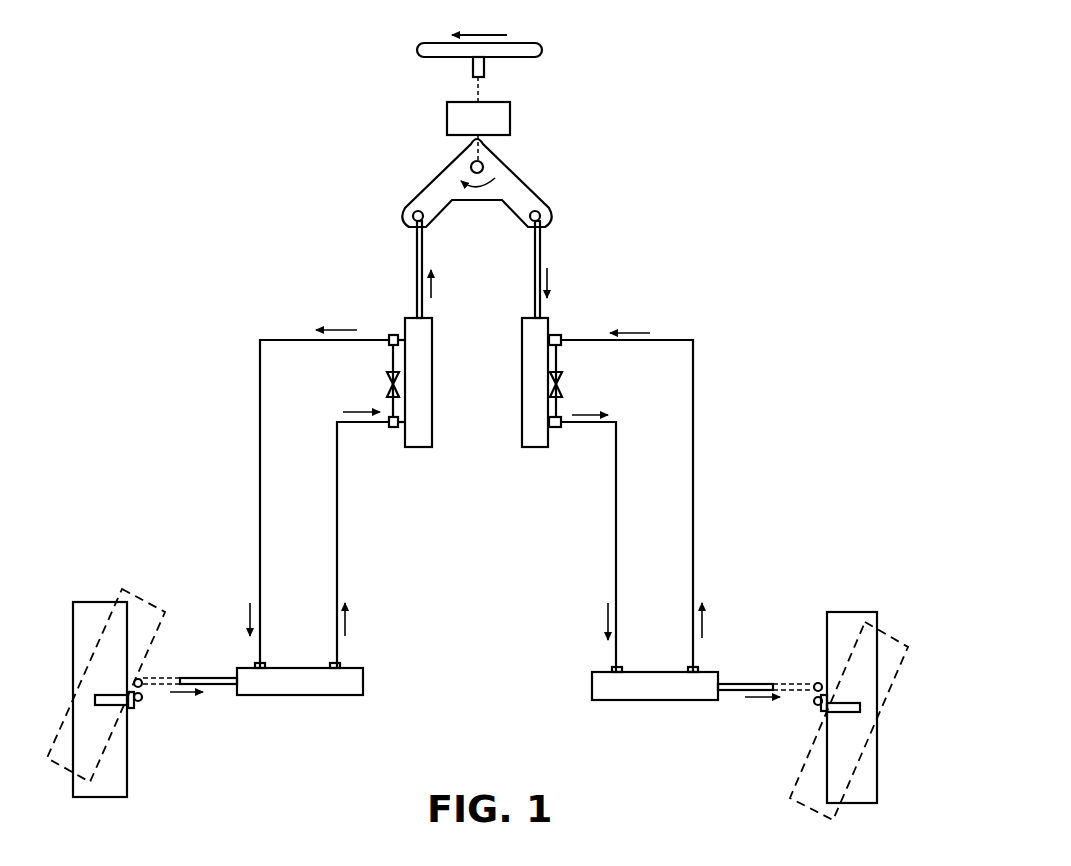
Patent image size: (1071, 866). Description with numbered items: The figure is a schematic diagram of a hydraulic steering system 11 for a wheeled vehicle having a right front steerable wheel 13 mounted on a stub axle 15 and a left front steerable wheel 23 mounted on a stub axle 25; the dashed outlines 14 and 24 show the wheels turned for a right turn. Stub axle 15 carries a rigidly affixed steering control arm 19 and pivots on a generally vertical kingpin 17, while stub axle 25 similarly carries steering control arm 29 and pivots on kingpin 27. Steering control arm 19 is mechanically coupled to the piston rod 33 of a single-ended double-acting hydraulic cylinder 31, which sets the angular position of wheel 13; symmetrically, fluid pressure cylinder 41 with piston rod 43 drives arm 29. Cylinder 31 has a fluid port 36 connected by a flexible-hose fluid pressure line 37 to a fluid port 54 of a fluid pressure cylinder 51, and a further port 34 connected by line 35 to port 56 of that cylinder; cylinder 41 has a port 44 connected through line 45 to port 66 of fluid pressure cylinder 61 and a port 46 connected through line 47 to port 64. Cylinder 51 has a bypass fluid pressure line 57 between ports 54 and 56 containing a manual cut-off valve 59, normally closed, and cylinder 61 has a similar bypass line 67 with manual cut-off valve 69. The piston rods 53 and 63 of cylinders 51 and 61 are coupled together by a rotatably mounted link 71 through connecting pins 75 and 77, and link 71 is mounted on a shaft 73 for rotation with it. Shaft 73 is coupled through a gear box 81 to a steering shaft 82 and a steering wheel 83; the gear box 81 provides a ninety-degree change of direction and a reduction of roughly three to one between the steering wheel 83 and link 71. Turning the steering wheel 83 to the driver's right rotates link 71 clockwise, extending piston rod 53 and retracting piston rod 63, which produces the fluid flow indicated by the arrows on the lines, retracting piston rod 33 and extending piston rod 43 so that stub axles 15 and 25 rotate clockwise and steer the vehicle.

The steering system 11 is at (471, 184).
The right front steerable wheel 13 is at (127, 790).
The dashed outline of wheel 14 is at (170, 590).
The stub axle 15 is at (95, 700).
The kingpin 17 is at (140, 703).
The steering control arm 19 is at (143, 680).
The left front steerable wheel 23 is at (827, 617).
The dashed outline of wheel 24 is at (795, 790).
The stub axle 25 is at (850, 712).
The kingpin 27 is at (815, 702).
The steering control arm 29 is at (815, 683).
The hydraulic cylinder 31 is at (280, 695).
The piston rod 33 is at (210, 678).
The fluid port 34 is at (340, 664).
The fluid pressure line 35 is at (337, 483).
The fluid port 36 is at (262, 664).
The fluid pressure line 37 is at (260, 460).
The fluid pressure cylinder 41 is at (640, 700).
The piston rod 43 is at (760, 684).
The fluid pressure port 44 is at (615, 668).
The fluid pressure line 45 is at (616, 500).
The port 46 is at (692, 668).
The line 47 is at (693, 470).
The fluid pressure cylinder 51 is at (433, 405).
The piston rod 53 is at (416, 262).
The fluid port 54 is at (392, 333).
The port 56 is at (393, 428).
The bypass fluid pressure line 57 is at (388, 399).
The manual cut-off valve 59 is at (388, 380).
The fluid pressure cylinder 61 is at (522, 346).
The piston rod 63 is at (540, 250).
The port 64 is at (560, 335).
The port 66 is at (558, 428).
The bypass line 67 is at (562, 401).
The manual cut-off valve 69 is at (562, 385).
The link 71 is at (520, 175).
The shaft 73 is at (470, 165).
The connecting pin 75 is at (412, 214).
The connecting pin 77 is at (542, 214).
The gear box 81 is at (462, 102).
The steering shaft 82 is at (485, 69).
The steering wheel 83 is at (543, 49).